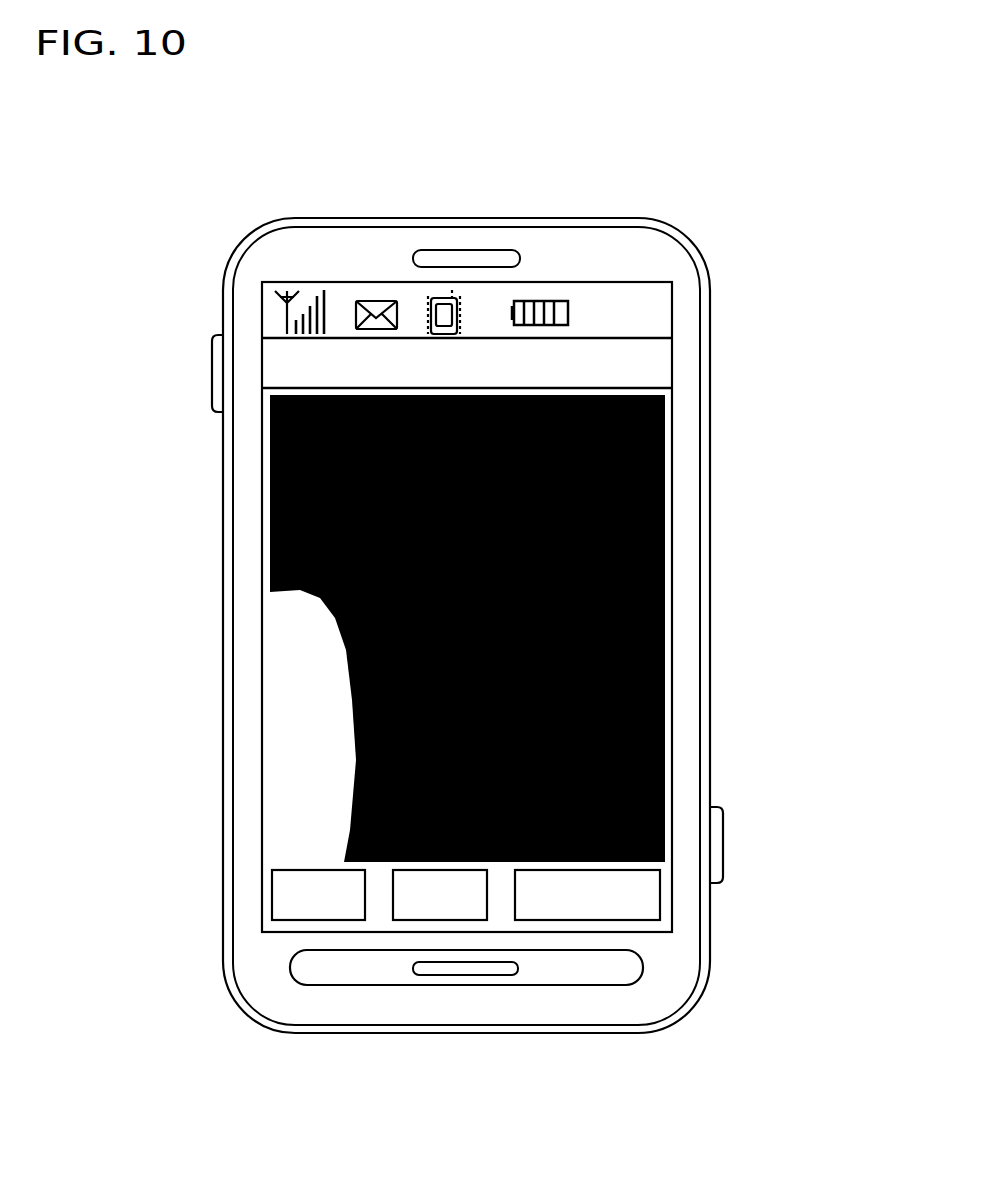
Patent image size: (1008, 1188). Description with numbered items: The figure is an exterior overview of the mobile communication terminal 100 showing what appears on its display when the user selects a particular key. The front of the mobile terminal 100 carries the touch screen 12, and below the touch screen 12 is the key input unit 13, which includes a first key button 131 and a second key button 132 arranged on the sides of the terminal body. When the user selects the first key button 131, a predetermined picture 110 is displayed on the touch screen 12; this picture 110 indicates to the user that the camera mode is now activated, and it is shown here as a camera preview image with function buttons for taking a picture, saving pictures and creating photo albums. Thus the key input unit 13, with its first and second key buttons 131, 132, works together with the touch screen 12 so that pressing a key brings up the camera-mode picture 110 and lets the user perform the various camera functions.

The mobile communication terminal 100 is at (291, 182).
The predetermined picture 110 is at (645, 367).
The touch screen 12 is at (673, 628).
The key input unit 13 is at (643, 965).
The first key button 131 is at (716, 843).
The second key button 132 is at (212, 370).